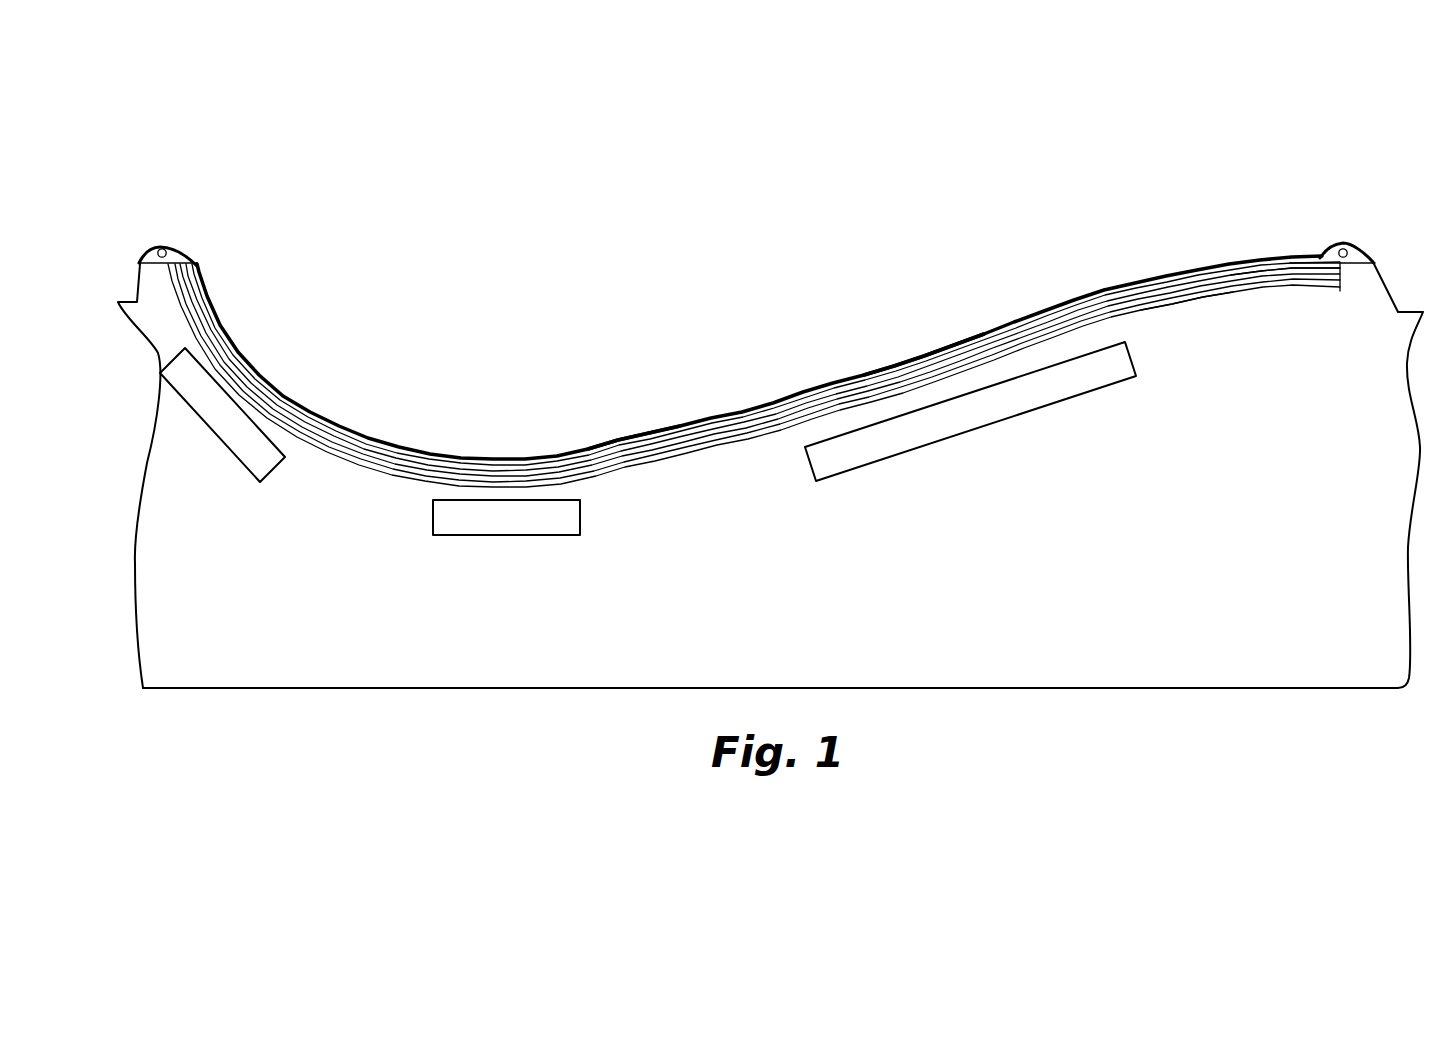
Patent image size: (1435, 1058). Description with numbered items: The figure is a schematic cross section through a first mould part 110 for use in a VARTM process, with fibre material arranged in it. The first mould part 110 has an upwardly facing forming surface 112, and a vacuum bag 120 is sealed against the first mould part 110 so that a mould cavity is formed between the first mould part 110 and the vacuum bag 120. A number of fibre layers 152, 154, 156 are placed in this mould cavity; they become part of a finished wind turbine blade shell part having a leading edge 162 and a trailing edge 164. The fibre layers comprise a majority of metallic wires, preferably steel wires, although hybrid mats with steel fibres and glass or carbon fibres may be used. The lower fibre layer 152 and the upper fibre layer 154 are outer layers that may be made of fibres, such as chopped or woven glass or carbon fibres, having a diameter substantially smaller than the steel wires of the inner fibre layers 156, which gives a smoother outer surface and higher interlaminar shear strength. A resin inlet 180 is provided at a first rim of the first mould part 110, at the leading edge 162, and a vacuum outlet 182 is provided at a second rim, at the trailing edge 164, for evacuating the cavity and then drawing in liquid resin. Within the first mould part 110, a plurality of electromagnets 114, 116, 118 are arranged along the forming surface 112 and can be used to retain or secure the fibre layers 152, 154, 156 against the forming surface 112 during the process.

The first mould part 110 is at (878, 564).
The forming surface 112 is at (1277, 278).
The electromagnet 114 is at (248, 458).
The electromagnet 116 is at (533, 520).
The electromagnet 118 is at (1003, 403).
The vacuum bag 120 is at (638, 434).
The lower fibre layer 152 is at (1195, 284).
The upper fibre layer 154 is at (913, 360).
The inner fibre layers 156 is at (322, 415).
The leading edge 162 is at (143, 262).
The trailing edge 164 is at (1373, 262).
The resin inlet 180 is at (163, 246).
The vacuum outlet 182 is at (1342, 246).